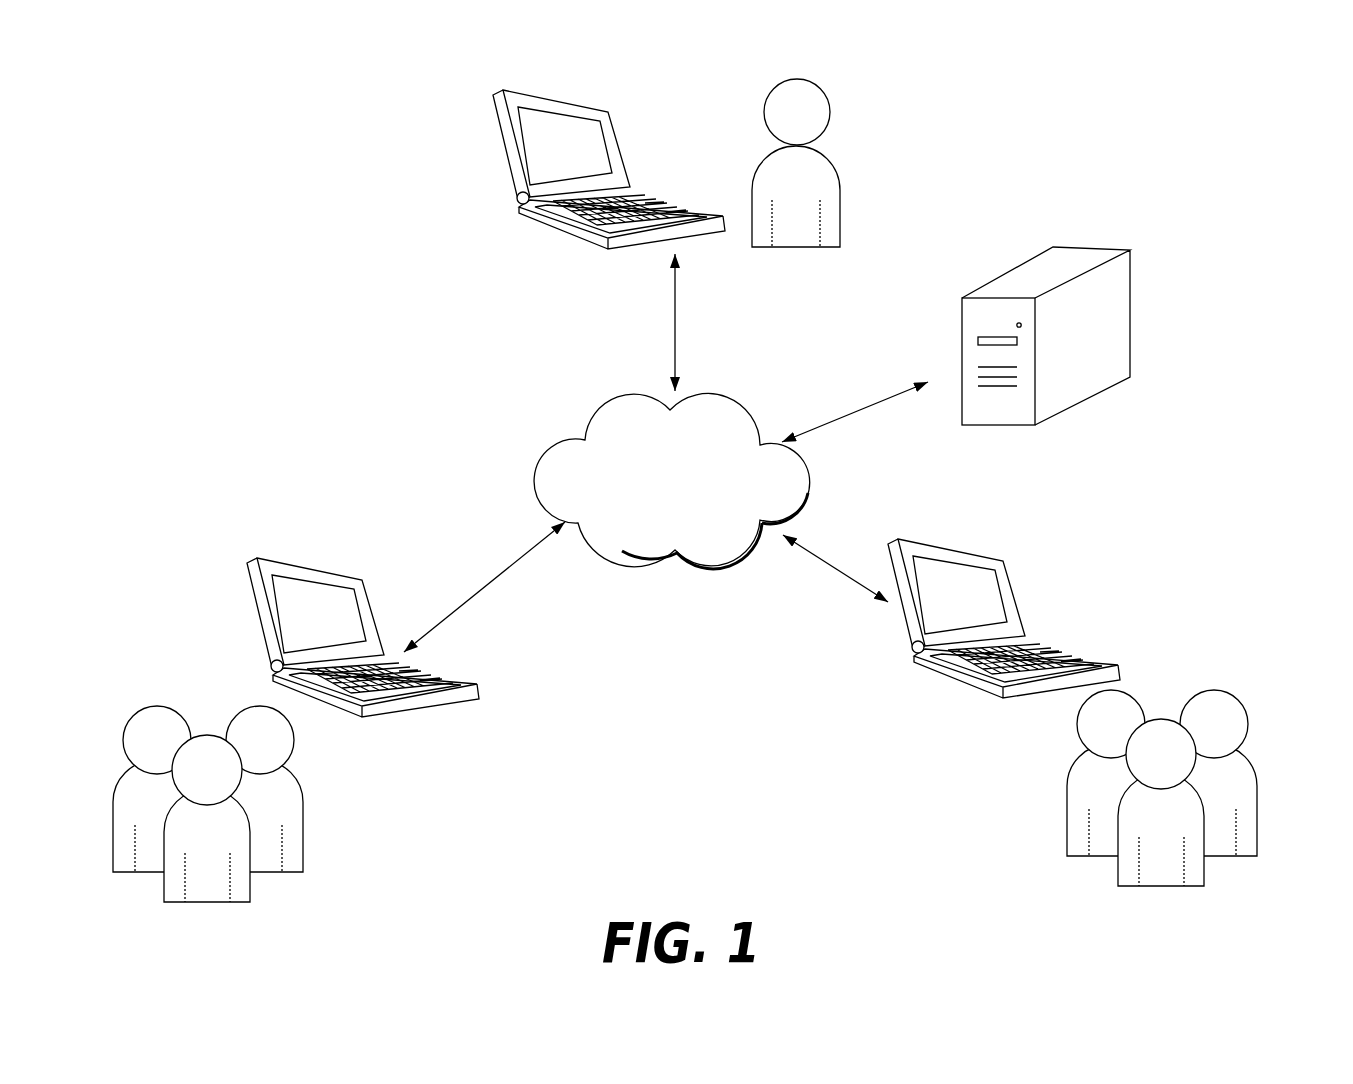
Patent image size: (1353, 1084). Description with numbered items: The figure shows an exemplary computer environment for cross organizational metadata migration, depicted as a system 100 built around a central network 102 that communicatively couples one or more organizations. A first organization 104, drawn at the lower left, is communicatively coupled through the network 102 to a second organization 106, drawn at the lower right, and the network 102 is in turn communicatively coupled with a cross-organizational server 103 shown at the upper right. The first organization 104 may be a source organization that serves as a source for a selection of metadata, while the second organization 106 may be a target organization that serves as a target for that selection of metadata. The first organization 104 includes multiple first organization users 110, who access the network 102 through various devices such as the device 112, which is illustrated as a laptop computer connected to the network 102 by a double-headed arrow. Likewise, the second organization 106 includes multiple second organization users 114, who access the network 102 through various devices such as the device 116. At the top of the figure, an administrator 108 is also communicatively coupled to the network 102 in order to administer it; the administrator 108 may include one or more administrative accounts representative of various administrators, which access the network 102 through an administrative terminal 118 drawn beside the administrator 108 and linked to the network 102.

The system 100 is at (1100, 163).
The network 102 is at (684, 490).
The cross-organizational server 103 is at (1172, 298).
The first organization 104 is at (184, 576).
The second organization 106 is at (1196, 576).
The administrator 108 is at (827, 102).
The first organization users 110 is at (273, 909).
The device 112 is at (417, 703).
The second organization users 114 is at (1224, 894).
The device 116 is at (975, 681).
The administrative terminal 118 is at (613, 128).